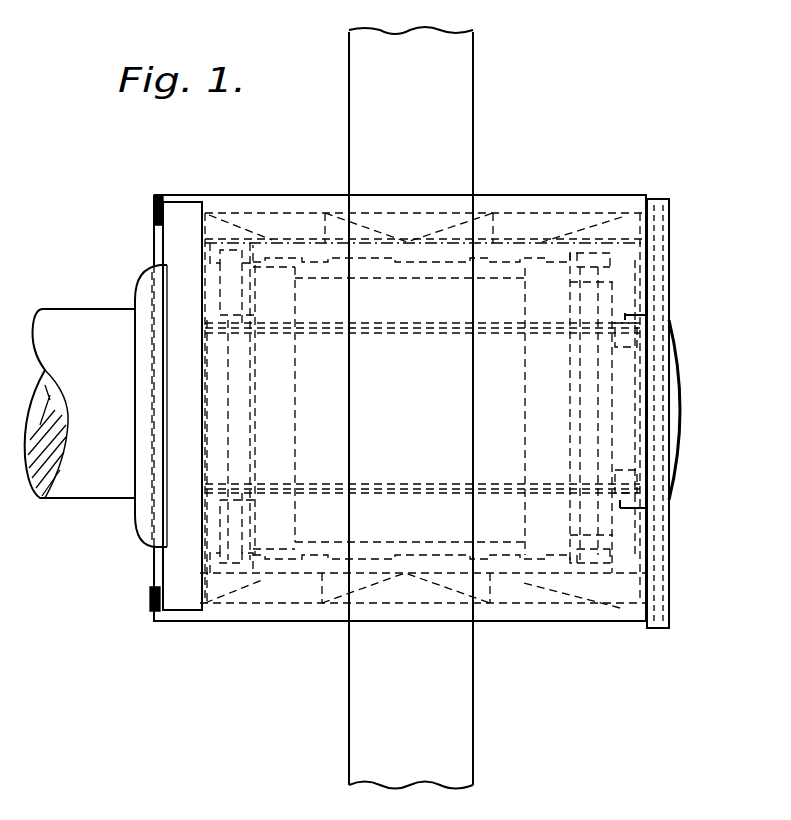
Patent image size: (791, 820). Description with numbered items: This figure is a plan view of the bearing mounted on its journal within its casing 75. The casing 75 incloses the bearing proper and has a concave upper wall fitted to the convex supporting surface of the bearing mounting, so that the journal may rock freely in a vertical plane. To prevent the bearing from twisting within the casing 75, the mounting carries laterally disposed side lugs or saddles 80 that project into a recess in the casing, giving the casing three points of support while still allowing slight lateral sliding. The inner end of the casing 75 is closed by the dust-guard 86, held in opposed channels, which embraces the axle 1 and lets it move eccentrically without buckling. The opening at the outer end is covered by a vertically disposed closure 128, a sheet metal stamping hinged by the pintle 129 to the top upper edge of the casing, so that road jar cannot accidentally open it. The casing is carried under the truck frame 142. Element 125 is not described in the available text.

The axle 1 is at (75, 309).
The casing 75 is at (292, 223).
The side lugs or saddles 80 is at (425, 215).
The dust-guard 86 is at (175, 555).
The end plate 125 is at (137, 522).
The closure 128 is at (665, 560).
The pintle 129 is at (665, 628).
The truck frame 142 is at (420, 759).